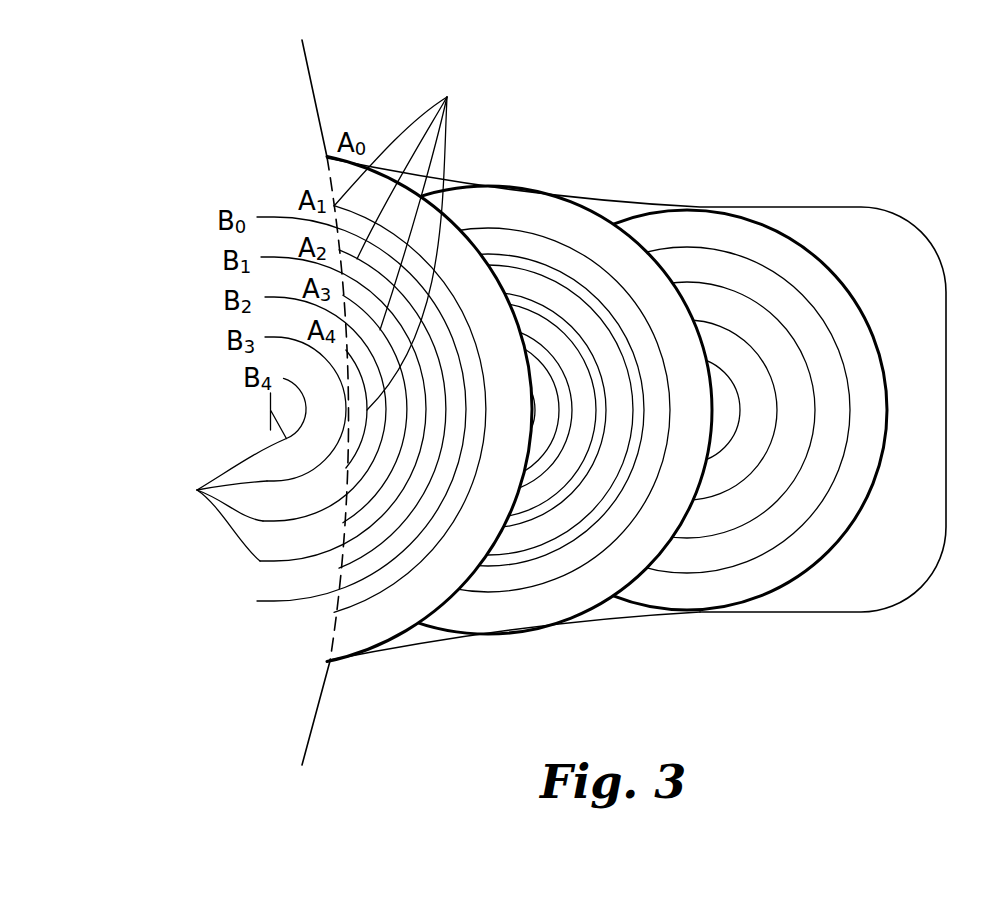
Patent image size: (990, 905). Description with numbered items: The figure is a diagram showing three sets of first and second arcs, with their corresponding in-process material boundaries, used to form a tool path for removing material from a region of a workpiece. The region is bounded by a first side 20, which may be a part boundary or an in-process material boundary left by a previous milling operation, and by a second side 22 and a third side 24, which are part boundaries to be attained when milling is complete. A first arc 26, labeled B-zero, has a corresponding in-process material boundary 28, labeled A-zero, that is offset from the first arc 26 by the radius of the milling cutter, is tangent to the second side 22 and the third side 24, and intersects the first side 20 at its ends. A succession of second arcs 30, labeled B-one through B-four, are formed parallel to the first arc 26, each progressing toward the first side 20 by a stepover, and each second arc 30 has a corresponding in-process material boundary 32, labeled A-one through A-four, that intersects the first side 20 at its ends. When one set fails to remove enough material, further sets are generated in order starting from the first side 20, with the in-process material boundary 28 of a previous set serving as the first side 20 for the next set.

The first side 20 is at (327, 176).
The second side 22 is at (798, 207).
The third side 24 is at (797, 612).
The first arc 26 is at (432, 542).
The in-process material boundary 28 is at (408, 628).
The second arcs 30 is at (222, 500).
The in-process material boundary 32 is at (412, 247).